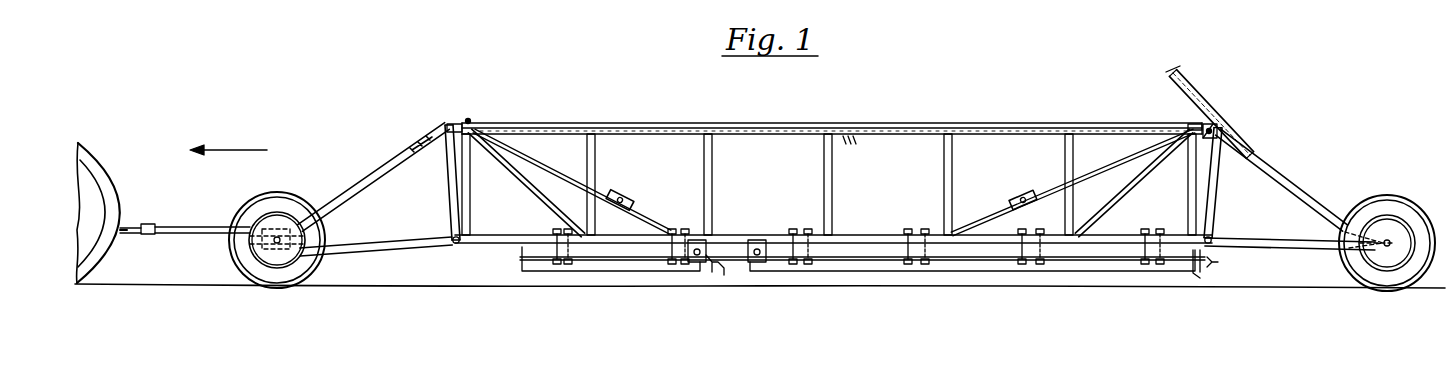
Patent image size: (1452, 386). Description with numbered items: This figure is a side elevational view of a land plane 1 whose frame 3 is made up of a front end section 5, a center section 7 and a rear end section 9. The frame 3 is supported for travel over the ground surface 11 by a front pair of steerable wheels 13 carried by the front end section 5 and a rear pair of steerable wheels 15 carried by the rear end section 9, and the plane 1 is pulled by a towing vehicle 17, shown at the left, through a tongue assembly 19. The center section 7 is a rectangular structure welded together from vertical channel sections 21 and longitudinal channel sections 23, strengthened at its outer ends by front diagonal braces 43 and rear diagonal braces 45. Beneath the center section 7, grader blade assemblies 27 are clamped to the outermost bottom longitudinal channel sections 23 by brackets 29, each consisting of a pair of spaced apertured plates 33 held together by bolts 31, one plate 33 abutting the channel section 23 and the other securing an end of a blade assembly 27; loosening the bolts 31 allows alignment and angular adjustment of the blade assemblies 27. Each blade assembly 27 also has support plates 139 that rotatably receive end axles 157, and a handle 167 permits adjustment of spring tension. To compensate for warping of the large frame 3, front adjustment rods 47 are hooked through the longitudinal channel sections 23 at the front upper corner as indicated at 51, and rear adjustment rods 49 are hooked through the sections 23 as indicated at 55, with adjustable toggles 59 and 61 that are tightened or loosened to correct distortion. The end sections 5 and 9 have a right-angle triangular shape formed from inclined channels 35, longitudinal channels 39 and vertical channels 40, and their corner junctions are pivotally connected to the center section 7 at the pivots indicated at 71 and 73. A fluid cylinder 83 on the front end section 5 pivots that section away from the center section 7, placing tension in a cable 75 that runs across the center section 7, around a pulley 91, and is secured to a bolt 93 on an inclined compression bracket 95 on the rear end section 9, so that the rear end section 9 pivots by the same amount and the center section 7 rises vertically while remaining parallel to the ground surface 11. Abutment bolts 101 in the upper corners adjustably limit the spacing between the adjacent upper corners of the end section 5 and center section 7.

The land plane 1 is at (878, 100).
The frame 3 is at (694, 124).
The front end section 5 is at (346, 192).
The center section 7 is at (914, 124).
The rear end section 9 is at (1322, 198).
The ground surface 11 is at (1246, 283).
The front pair of steerable wheels 13 is at (273, 193).
The rear pair of steerable wheels 15 is at (1387, 195).
The towing vehicle 17 is at (104, 150).
The tongue assembly 19 is at (178, 226).
The vertical channel sections 21 is at (470, 178).
The longitudinal channel sections 23 is at (640, 127).
The grader blade assemblies 27 is at (522, 271).
The brackets 29 is at (550, 227).
The bolts 31 is at (806, 228).
The apertured plates 33 is at (566, 266).
The inclined channels 35 is at (362, 185).
The longitudinal channels 39 is at (343, 248).
The vertical channels 40 is at (446, 203).
The front diagonal braces 43 is at (537, 187).
The rear diagonal braces 45 is at (1129, 193).
The front adjustment rods 47 is at (527, 150).
The rear adjustment rods 49 is at (1108, 165).
The hooked connection of front adjustment rods 51 is at (468, 119).
The hooked connection of rear adjustment rods 55 is at (1192, 124).
The adjustable toggles 59 is at (622, 195).
The adjustable toggles 61 is at (1021, 196).
The pivotal connection 71 is at (454, 248).
The pivotal connection 73 is at (1220, 233).
The cable 75 is at (849, 143).
The fluid cylinder 83 is at (430, 153).
The sheave or pulley 91 is at (1214, 123).
The bolt 93 is at (1177, 73).
The compression bracket 95 is at (1196, 86).
The abutment bolts 101 is at (452, 126).
The support plates 139 is at (703, 246).
The end axles 157 is at (722, 276).
The handle 167 is at (1214, 263).